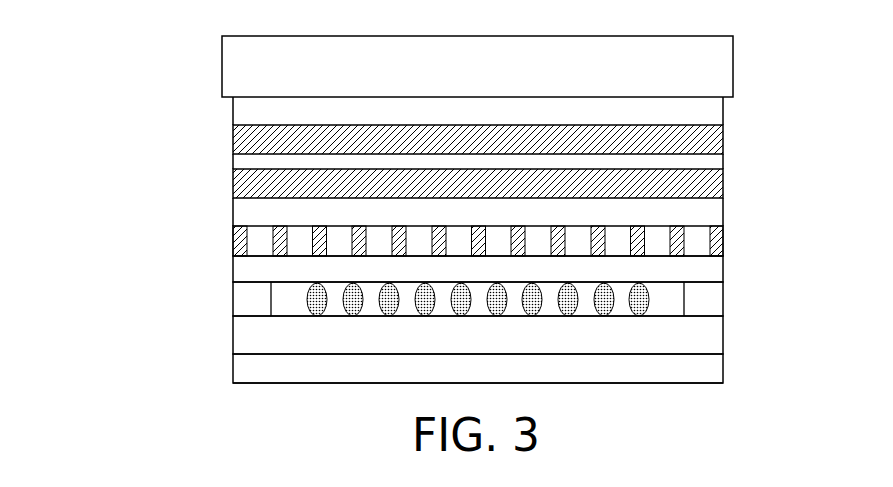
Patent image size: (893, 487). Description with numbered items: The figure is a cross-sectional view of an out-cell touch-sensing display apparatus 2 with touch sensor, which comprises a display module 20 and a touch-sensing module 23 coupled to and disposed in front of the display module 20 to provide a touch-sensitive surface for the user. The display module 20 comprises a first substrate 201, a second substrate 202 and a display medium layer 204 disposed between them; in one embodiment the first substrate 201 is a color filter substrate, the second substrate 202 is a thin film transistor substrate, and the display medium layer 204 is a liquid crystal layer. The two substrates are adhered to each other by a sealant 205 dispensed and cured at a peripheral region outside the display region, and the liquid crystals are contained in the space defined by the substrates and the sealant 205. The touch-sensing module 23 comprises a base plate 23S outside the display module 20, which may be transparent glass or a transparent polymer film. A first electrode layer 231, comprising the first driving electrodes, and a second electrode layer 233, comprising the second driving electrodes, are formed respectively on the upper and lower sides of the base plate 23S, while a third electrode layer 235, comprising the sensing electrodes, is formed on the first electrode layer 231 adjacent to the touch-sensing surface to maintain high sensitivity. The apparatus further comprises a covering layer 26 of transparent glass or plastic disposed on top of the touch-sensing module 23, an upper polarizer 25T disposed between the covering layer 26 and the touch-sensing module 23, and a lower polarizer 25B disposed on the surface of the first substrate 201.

The display apparatus with touch sensor 2 is at (76, 28).
The covering layer 26 is at (710, 68).
The upper polarizer 25T is at (712, 111).
The touch-sensing module 23 is at (428, 190).
The third electrode layer 235 is at (240, 137).
The first electrode layer 231 is at (240, 186).
The base plate 23S is at (243, 213).
The second electrode layer 233 is at (448, 241).
The display module 20 is at (428, 319).
The second substrate 202 is at (243, 270).
The sealant 205 is at (252, 300).
The display medium layer 204 is at (287, 304).
The first substrate 201 is at (448, 364).
The lower polarizer 25B is at (713, 370).